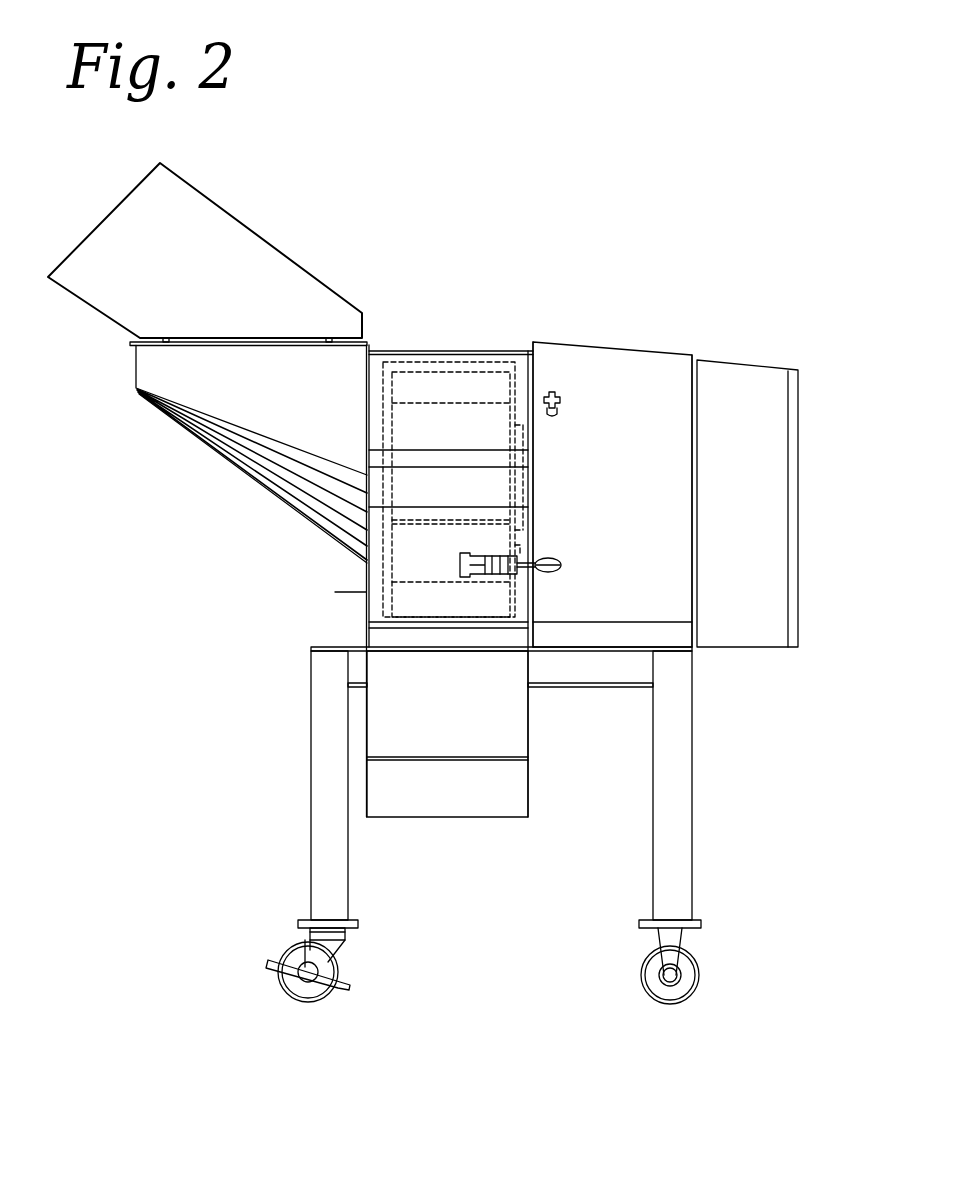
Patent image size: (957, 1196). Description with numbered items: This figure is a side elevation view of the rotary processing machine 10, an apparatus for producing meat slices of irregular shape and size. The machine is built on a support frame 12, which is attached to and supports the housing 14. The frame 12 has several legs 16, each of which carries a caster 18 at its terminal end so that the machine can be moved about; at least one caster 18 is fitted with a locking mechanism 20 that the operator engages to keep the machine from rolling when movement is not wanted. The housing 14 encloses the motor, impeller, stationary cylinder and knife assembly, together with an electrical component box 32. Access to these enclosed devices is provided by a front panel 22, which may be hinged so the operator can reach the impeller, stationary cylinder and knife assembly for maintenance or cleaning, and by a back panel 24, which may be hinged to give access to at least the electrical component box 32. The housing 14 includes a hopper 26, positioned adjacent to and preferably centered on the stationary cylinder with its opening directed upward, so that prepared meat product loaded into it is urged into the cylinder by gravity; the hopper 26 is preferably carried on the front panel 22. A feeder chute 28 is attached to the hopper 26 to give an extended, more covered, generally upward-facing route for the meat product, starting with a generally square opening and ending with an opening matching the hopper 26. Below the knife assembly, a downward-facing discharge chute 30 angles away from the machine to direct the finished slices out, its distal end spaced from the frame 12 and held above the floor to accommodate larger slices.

The rotary processing machine 10 is at (425, 224).
The support frame 12 is at (573, 688).
The housing 14 is at (595, 347).
The legs 16 is at (690, 785).
The casters 18 is at (701, 968).
The locking mechanism 20 is at (350, 975).
The front panel 22 is at (367, 592).
The back panel 24 is at (797, 543).
The hopper 26 is at (252, 478).
The feeder chute 28 is at (93, 307).
The discharge chute 30 is at (423, 818).
The electrical component box 32 is at (733, 625).